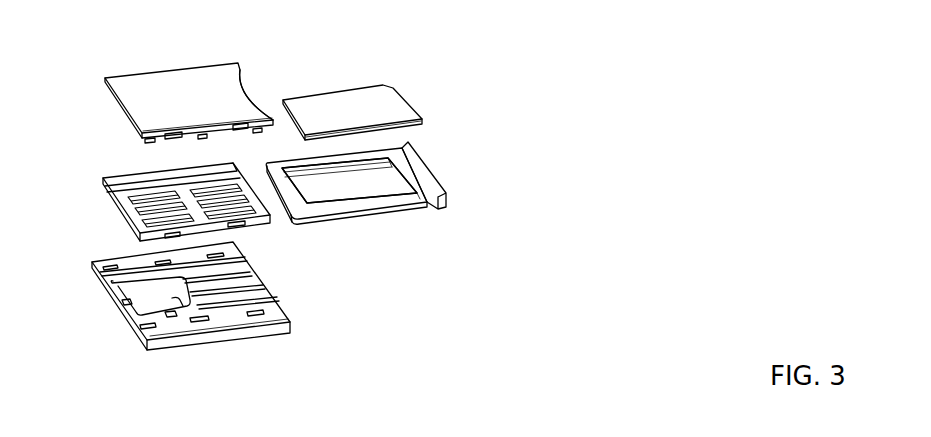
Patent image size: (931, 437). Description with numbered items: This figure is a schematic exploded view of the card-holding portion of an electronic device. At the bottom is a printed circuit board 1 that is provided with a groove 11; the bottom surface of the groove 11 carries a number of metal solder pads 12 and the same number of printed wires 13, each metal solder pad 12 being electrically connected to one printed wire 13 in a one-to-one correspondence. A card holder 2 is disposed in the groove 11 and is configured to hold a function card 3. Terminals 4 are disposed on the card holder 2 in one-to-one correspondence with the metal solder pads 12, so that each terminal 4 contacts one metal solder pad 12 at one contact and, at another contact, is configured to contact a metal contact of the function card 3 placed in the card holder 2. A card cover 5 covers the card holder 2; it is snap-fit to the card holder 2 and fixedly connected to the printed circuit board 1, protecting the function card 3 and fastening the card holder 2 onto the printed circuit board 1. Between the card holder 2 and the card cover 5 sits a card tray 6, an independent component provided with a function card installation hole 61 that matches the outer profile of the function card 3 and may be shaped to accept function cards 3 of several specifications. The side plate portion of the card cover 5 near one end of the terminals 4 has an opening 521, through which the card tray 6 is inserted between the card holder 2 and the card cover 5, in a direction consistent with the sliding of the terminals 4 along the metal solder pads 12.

The printed circuit board 1 is at (218, 338).
The groove 11 is at (107, 280).
The metal solder pads 12 is at (128, 310).
The printed wires 13 is at (168, 318).
The card holder 2 is at (122, 205).
The terminals 4 is at (150, 195).
The card cover 5 is at (152, 107).
The opening 521 is at (254, 95).
The function card 3 is at (390, 103).
The card tray 6 is at (425, 200).
The function card installation hole 61 is at (348, 185).